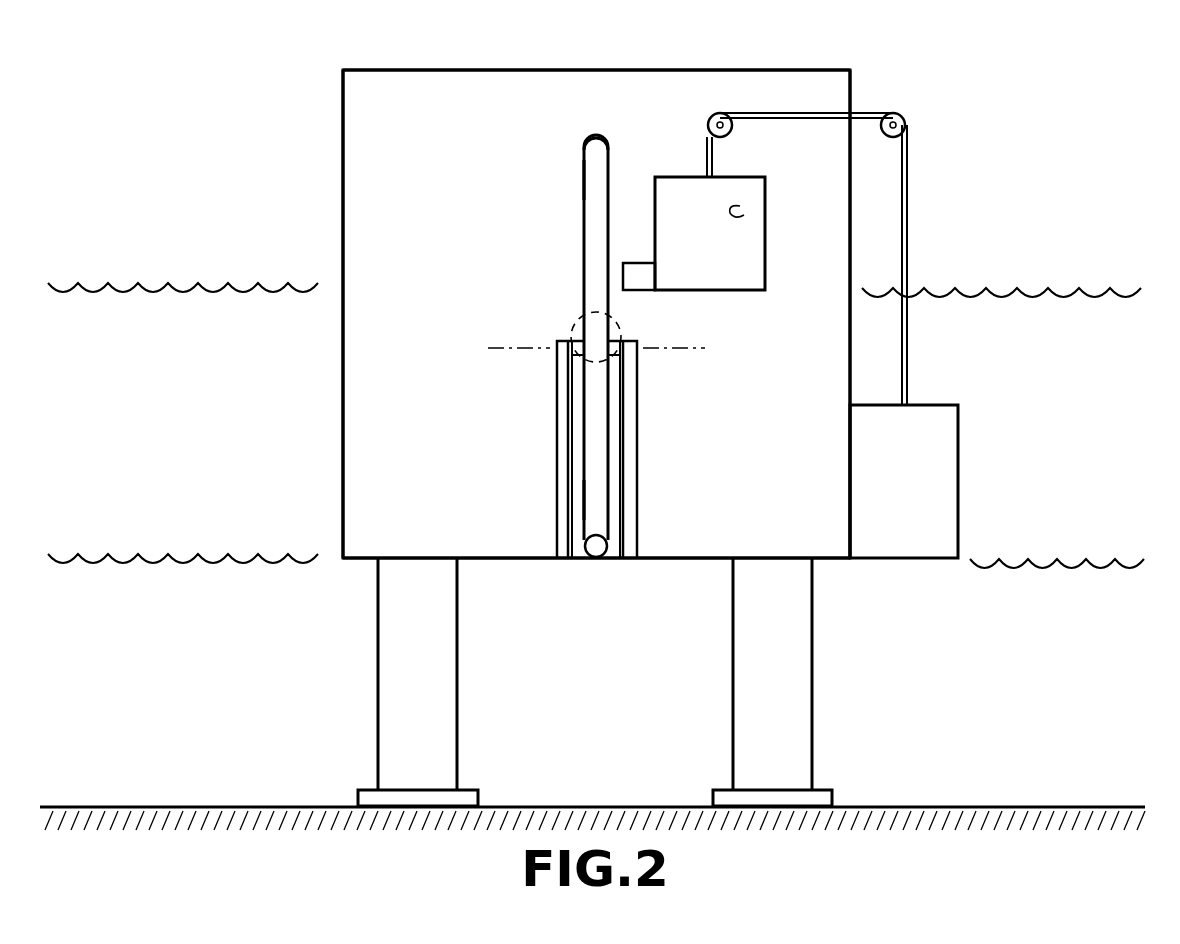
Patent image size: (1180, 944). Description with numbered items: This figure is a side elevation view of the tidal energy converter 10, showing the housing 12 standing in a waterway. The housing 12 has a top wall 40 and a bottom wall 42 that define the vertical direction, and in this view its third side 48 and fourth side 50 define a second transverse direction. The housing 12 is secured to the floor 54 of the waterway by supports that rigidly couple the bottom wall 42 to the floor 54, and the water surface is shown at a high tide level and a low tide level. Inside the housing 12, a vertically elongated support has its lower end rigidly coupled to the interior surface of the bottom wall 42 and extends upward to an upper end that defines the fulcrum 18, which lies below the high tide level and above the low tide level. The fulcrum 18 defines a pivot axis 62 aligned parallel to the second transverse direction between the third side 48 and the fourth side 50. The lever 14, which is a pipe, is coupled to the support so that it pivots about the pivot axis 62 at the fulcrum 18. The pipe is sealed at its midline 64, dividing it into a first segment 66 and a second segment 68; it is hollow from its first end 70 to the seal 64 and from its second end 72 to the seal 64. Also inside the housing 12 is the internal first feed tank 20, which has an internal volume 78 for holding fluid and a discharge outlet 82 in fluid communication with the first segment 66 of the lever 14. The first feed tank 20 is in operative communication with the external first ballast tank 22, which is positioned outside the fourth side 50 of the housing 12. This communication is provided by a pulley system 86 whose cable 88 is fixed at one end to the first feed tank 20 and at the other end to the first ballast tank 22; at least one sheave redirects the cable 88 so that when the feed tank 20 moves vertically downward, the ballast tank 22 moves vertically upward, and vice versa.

The tidal energy converter 10 is at (928, 68).
The housing 12 is at (626, 68).
The lever 14 is at (582, 228).
The fulcrum 18 is at (630, 350).
The internal first feed tank 20 is at (716, 292).
The external first ballast tank 22 is at (960, 462).
The top wall 40 is at (728, 70).
The bottom wall 42 is at (672, 560).
The third side 48 is at (343, 182).
The fourth side 50 is at (852, 90).
The floor 54 is at (975, 806).
The pivot axis 62 is at (505, 348).
The midline seal 64 is at (575, 320).
The first segment 66 is at (590, 496).
The second segment 68 is at (588, 178).
The first end 70 is at (600, 536).
The second end 72 is at (595, 135).
The internal volume 78 is at (744, 215).
The discharge outlet 82 is at (623, 275).
The pulley system 86 is at (910, 189).
The cable 88 is at (908, 246).